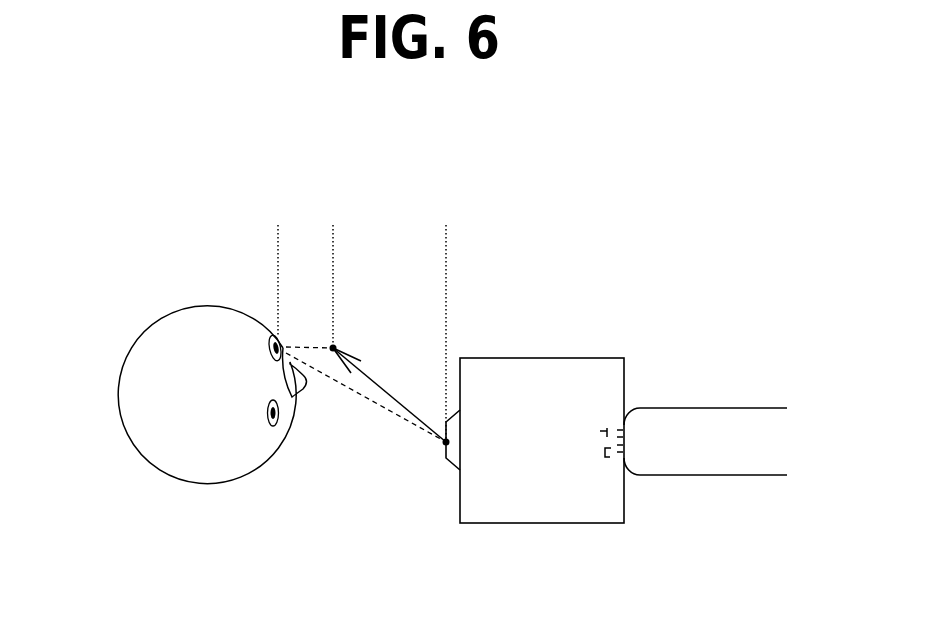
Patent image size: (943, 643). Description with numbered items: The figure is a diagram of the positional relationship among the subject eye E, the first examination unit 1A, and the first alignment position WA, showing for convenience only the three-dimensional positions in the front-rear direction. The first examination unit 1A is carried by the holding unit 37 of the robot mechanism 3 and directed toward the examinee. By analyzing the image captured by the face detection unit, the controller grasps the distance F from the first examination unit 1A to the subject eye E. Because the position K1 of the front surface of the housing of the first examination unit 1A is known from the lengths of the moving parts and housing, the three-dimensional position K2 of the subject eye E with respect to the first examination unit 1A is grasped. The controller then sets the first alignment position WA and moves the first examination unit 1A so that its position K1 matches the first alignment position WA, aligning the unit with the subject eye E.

The subject eye E is at (245, 343).
The three-dimensional position of the subject eye K2 is at (276, 254).
The first alignment position WA is at (332, 262).
The position of the first examination unit K1 is at (442, 309).
The distance from the face detection unit to the subject eye F is at (389, 401).
The robot mechanism 3 is at (737, 422).
The holding unit 37 is at (604, 428).
The first examination unit 1A is at (577, 515).